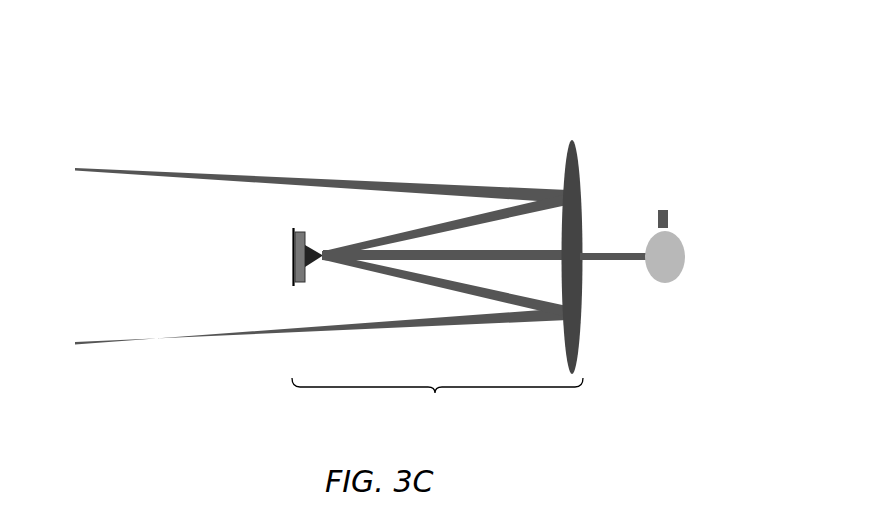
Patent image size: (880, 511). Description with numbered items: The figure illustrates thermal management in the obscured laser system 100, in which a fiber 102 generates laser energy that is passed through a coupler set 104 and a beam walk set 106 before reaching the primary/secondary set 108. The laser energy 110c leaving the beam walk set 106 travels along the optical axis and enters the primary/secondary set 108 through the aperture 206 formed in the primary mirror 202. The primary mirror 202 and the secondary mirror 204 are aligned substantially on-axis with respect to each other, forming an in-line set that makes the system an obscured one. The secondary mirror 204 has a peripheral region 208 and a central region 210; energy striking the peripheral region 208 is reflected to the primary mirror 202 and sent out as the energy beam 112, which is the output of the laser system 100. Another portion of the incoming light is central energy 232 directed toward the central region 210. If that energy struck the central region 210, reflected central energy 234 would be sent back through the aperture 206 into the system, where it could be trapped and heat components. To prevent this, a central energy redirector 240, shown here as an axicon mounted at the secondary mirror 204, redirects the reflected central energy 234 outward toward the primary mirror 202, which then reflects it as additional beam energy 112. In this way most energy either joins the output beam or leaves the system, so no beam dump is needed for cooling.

The laser system 100 is at (694, 100).
The fiber 102 is at (667, 211).
The coupler set 104 is at (682, 284).
The beam walk set 106 is at (688, 301).
The primary/secondary set 108 is at (450, 425).
The laser energy 110c is at (609, 242).
The energy beam 112 is at (140, 166).
The primary mirror 202 is at (569, 142).
The secondary mirror 204 is at (284, 230).
The aperture 206 is at (585, 273).
The peripheral region 208 is at (308, 231).
The central region 210 is at (308, 283).
The central energy 232 is at (519, 242).
The reflected central energy 234 is at (421, 223).
The central energy redirector 240 is at (323, 262).